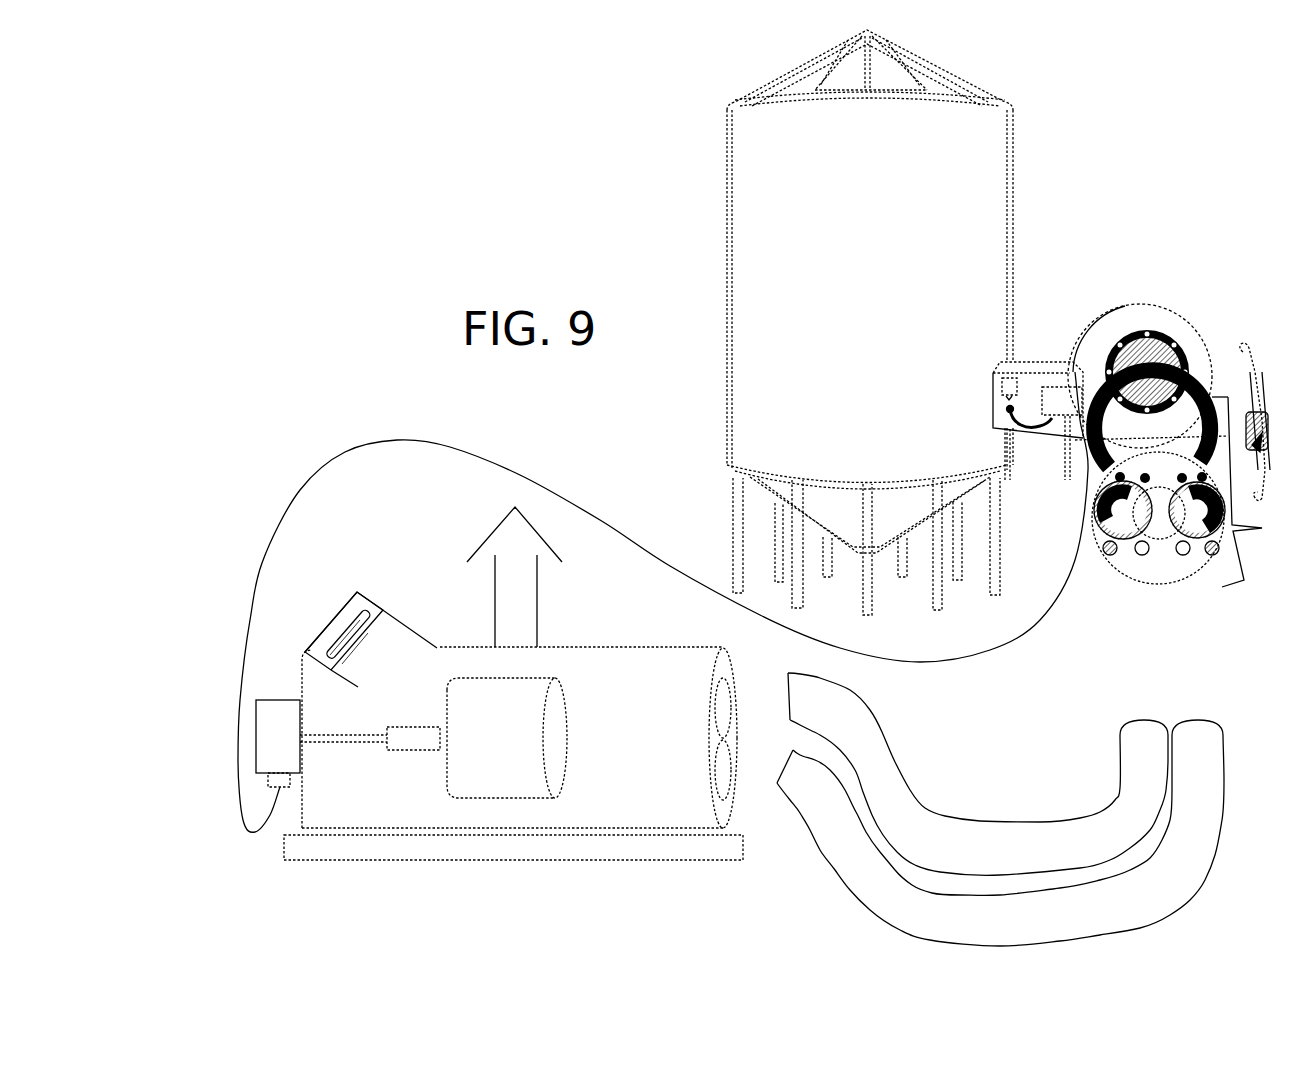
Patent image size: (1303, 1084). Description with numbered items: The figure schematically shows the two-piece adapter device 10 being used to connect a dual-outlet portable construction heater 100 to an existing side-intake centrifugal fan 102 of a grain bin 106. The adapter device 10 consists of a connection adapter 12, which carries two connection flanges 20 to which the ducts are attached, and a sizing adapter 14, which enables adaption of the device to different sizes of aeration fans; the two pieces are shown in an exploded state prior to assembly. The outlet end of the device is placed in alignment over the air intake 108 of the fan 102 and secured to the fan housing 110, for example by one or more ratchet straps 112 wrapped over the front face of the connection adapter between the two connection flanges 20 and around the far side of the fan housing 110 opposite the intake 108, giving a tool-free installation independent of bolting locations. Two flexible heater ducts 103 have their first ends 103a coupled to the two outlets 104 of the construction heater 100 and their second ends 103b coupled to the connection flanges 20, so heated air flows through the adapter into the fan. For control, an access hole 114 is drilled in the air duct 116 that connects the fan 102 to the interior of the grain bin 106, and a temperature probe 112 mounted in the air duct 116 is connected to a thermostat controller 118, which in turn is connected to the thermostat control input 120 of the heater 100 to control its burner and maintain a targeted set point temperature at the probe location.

The adapter device 10 is at (1261, 492).
The connection adapter 12 is at (1150, 581).
The sizing adapter 14 is at (1203, 377).
The connection flanges 20 is at (1097, 528).
The portable construction heater 100 is at (463, 614).
The side-intake centrifugal fan 102 is at (1148, 284).
The flexible heater ducts 103 is at (1200, 755).
The first ends of flexible ducts 103a is at (777, 770).
The second ends of flexible ducts 103b is at (1190, 717).
The heater outlets 104 is at (720, 765).
The grain bin 106 is at (978, 174).
The air intake 108 is at (1156, 339).
The fan housing 110 is at (1077, 305).
The ratchet strap / temperature probe 112 is at (1002, 386).
The access hole 114 is at (1000, 405).
The air duct 116 is at (1022, 362).
The thermostat controller 118 is at (1058, 398).
The thermostat control input 120 is at (290, 782).